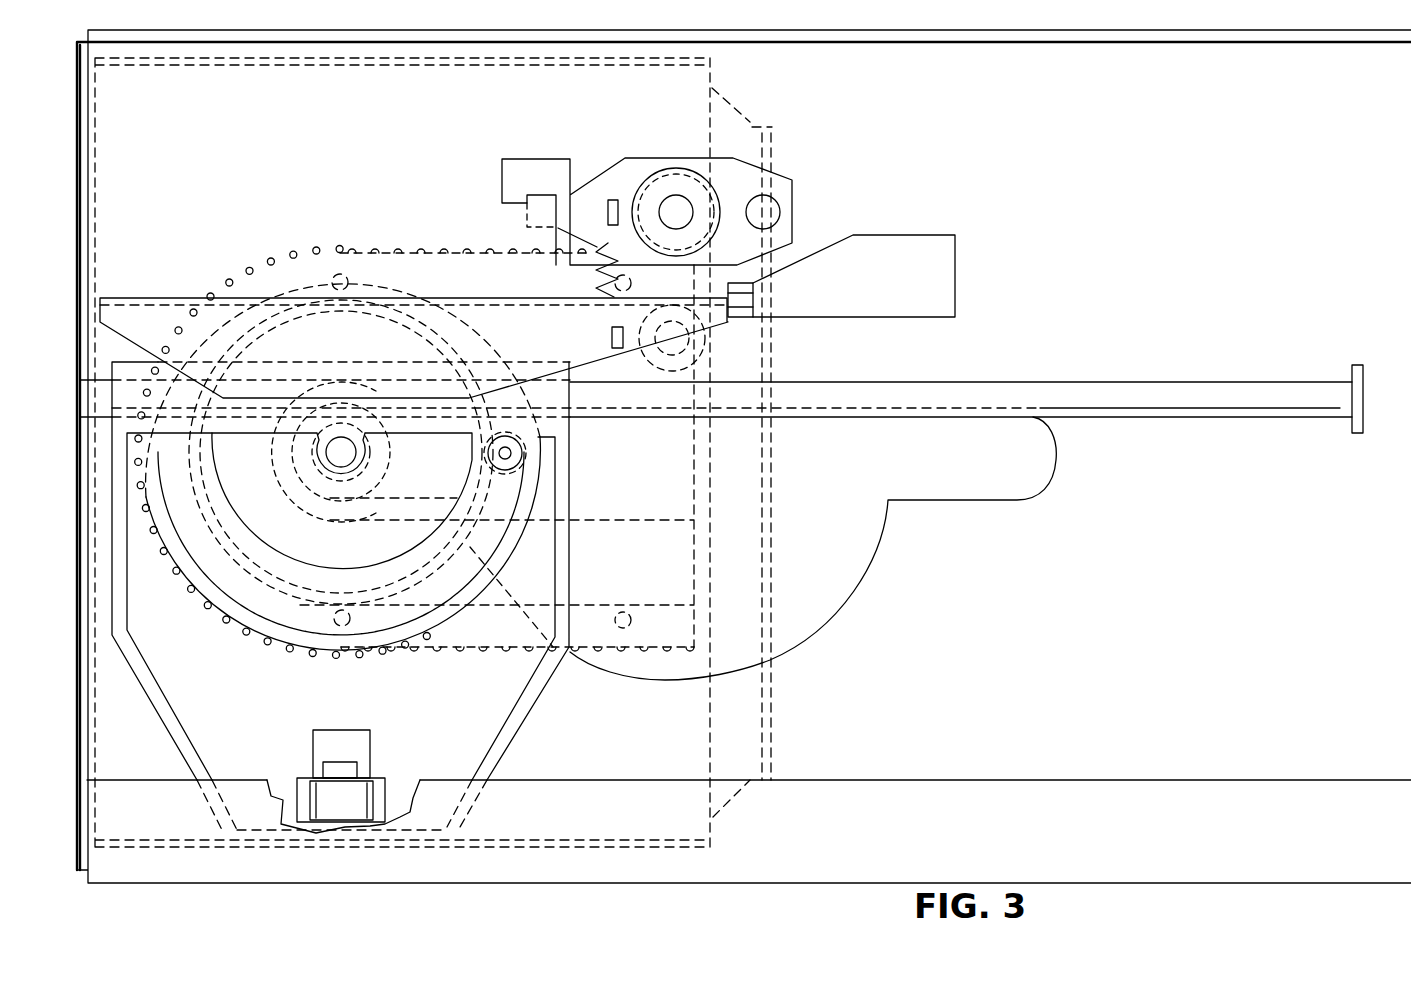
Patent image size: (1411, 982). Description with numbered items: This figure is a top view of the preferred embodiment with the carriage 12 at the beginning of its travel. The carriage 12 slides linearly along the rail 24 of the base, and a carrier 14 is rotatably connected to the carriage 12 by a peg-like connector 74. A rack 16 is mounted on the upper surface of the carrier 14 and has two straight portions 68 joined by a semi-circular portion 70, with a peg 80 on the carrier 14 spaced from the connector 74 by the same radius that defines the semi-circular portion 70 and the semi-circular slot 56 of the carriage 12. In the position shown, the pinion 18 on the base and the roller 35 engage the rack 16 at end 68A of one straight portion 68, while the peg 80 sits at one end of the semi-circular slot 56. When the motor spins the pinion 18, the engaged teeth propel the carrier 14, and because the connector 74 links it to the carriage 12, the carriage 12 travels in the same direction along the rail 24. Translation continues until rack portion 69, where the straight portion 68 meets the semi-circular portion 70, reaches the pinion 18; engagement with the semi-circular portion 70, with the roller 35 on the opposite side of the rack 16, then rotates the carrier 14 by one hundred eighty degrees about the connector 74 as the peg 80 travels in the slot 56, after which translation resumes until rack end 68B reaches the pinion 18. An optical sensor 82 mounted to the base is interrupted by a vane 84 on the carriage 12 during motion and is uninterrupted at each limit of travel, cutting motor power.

The carriage 12 is at (520, 736).
The carrier 14 is at (776, 692).
The rack 16 is at (244, 277).
The pinion 18 is at (652, 195).
The rail 24 is at (1203, 385).
The roller 35 is at (697, 353).
The semi-circular slot 56 is at (443, 598).
The straight portion 68 is at (500, 460).
The rack end 68A is at (733, 222).
The rack end 68B is at (690, 653).
The rack portion 69 is at (334, 248).
The semi-circular portion 70 is at (145, 497).
The connector 74 is at (338, 460).
The peg 80 is at (518, 442).
The optical sensor 82 is at (754, 302).
The vane 84 is at (153, 318).